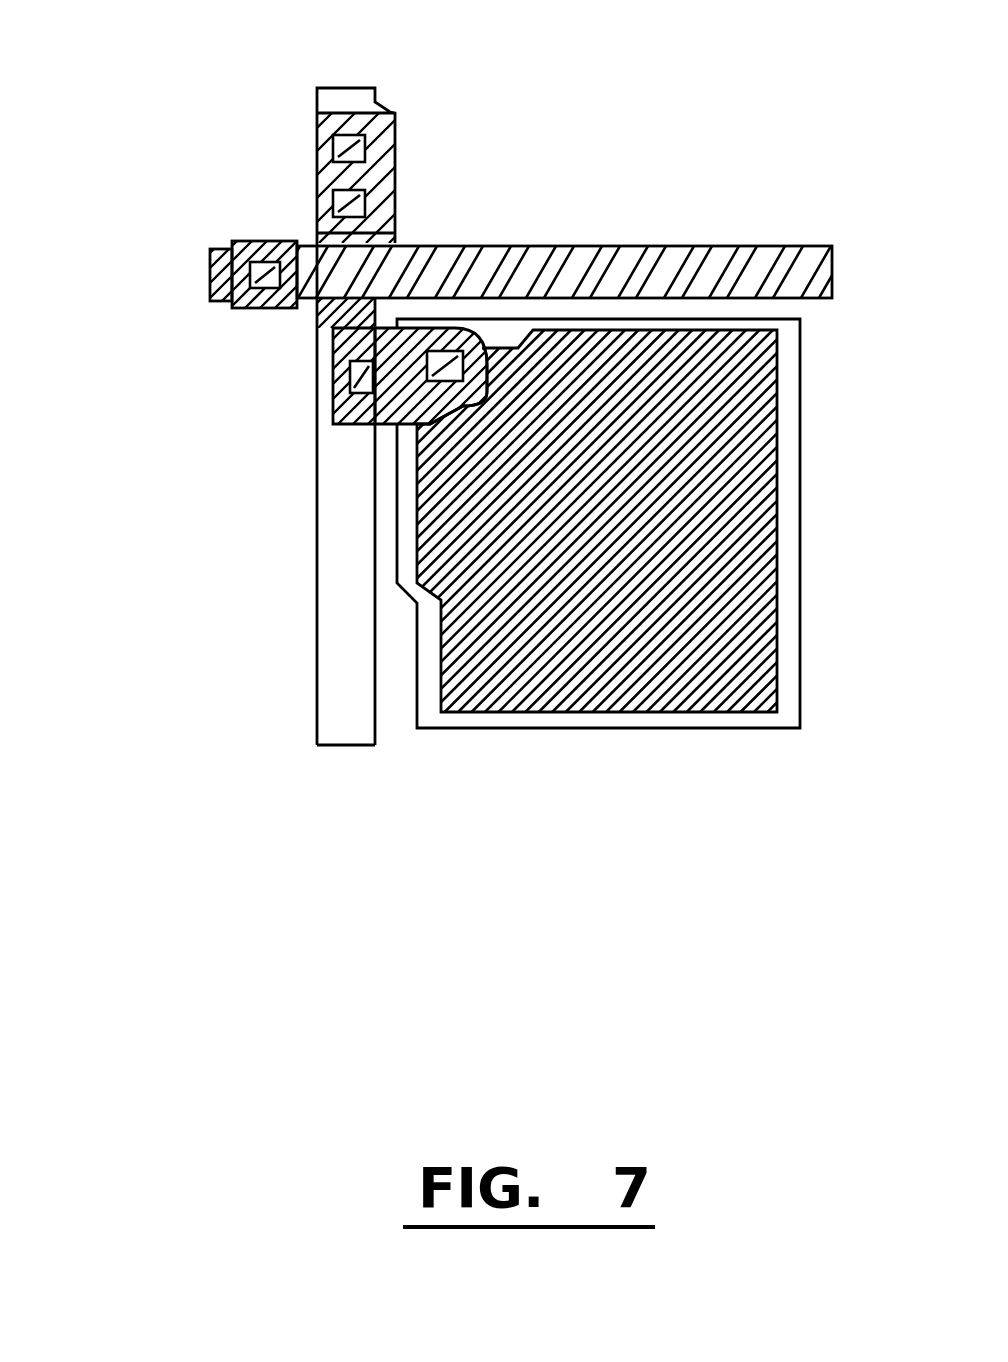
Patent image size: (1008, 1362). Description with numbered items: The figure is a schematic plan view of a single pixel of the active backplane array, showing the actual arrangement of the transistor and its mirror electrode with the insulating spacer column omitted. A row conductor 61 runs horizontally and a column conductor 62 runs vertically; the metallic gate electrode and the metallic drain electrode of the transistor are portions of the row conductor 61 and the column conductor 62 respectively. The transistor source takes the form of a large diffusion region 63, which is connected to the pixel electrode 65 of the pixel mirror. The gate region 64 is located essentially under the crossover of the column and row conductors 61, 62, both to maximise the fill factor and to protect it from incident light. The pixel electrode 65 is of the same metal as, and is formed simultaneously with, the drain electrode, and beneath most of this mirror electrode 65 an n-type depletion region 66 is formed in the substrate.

The row conductor 61 is at (640, 262).
The column conductor 62 is at (340, 555).
The diffusion region 63 is at (317, 330).
The gate region 64 is at (317, 247).
The pixel electrode 65 is at (548, 730).
The n-type depletion region 66 is at (682, 650).